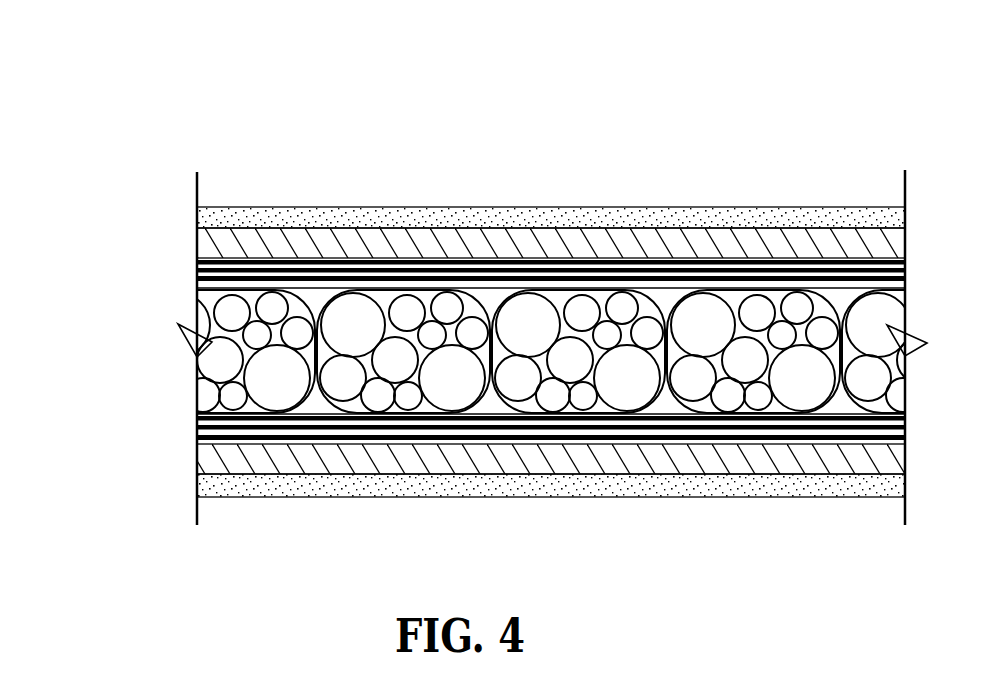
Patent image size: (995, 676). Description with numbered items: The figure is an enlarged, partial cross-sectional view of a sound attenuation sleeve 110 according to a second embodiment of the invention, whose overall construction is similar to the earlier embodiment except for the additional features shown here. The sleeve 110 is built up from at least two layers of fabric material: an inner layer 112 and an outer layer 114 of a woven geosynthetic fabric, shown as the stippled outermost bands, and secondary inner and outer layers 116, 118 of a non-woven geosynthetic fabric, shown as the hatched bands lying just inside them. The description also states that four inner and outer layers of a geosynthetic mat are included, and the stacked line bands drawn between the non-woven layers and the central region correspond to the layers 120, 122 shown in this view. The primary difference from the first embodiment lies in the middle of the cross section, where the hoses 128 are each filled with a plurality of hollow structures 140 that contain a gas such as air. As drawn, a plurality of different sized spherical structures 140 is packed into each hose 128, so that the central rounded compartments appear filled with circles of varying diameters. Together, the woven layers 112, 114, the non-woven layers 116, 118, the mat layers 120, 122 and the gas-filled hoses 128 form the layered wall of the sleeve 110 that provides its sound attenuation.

The sound attenuation sleeve 110 is at (617, 176).
The inner layer of woven geosynthetic fabric 112 is at (247, 211).
The outer layer of woven geosynthetic fabric 114 is at (248, 488).
The secondary inner layer of non-woven geosynthetic fabric 116 is at (203, 248).
The secondary outer layer of non-woven geosynthetic fabric 118 is at (200, 462).
The first fabric scrim layer 120 is at (200, 267).
The second fabric scrim layer 122 is at (200, 428).
The hoses 128 is at (829, 302).
The hollow structures 140 is at (627, 395).